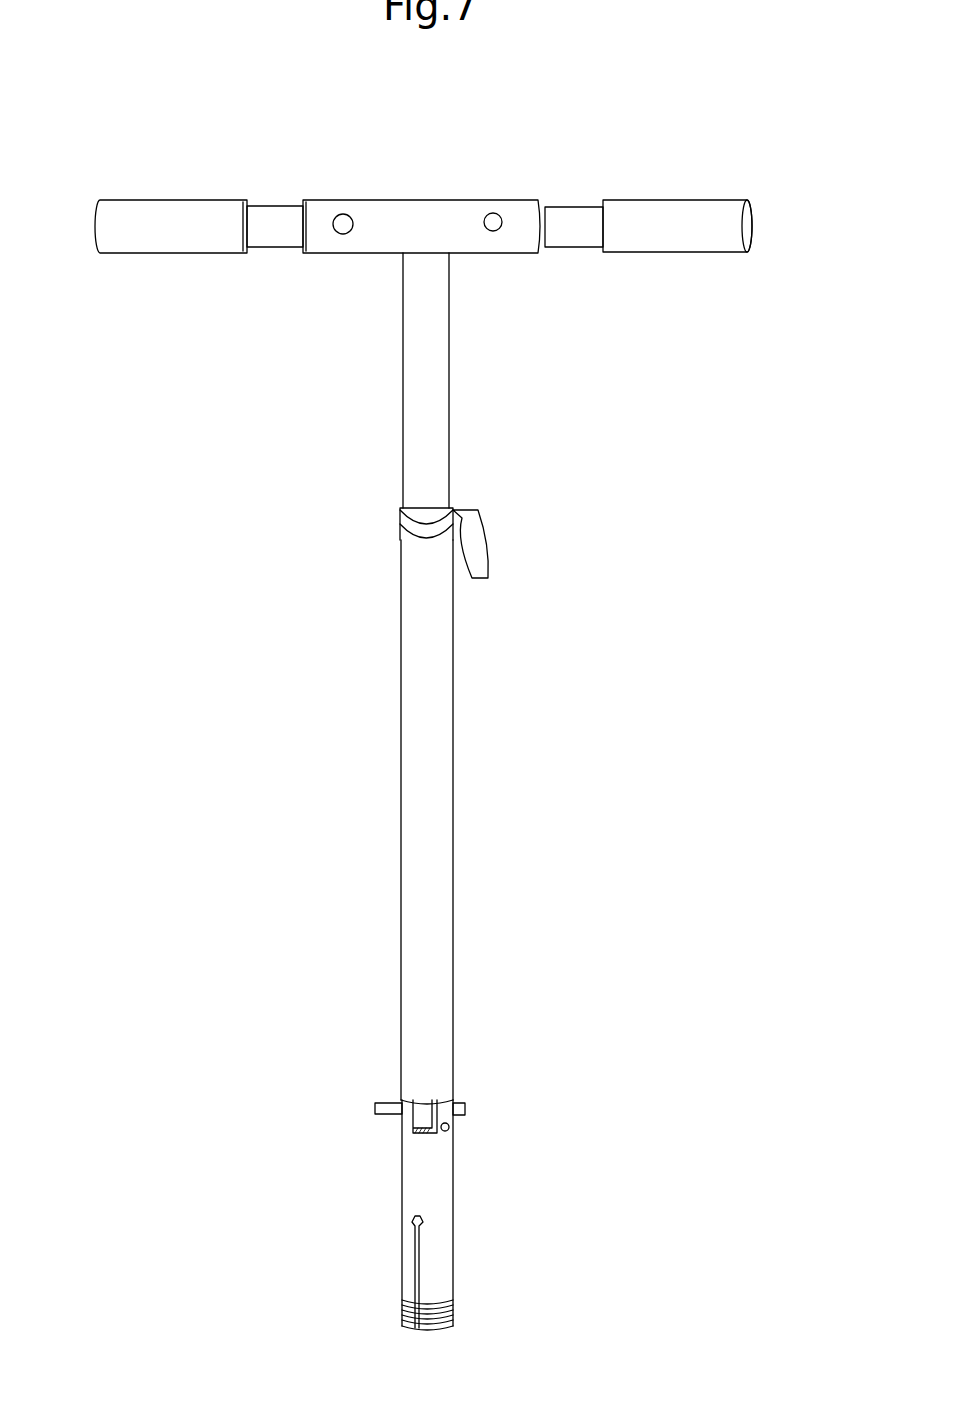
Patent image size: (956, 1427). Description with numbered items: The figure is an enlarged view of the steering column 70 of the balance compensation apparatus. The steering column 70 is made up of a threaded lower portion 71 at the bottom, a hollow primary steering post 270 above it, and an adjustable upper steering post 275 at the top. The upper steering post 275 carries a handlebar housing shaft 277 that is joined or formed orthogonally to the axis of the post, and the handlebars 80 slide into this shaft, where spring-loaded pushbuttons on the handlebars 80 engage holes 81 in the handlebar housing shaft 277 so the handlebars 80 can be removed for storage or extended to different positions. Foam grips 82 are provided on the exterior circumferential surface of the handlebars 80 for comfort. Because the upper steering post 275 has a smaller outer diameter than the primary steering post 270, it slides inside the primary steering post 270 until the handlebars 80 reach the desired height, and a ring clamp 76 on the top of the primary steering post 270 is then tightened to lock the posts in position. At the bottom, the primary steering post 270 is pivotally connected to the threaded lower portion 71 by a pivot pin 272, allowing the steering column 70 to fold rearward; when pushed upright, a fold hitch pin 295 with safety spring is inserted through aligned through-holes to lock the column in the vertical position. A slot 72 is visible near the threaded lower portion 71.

The steering column 70 is at (318, 792).
The threaded lower portion 71 is at (440, 1255).
The slot 72 is at (413, 1258).
The ring clamp 76 is at (478, 523).
The handlebars 80 is at (270, 205).
The hole 81 is at (345, 214).
The foam grips 82 is at (143, 210).
The primary steering post 270 is at (440, 810).
The pivot pin 272 is at (452, 1128).
The adjustable upper steering post 275 is at (440, 437).
The handlebar housing shaft 277 is at (403, 232).
The fold hitch pin 295 is at (375, 1107).